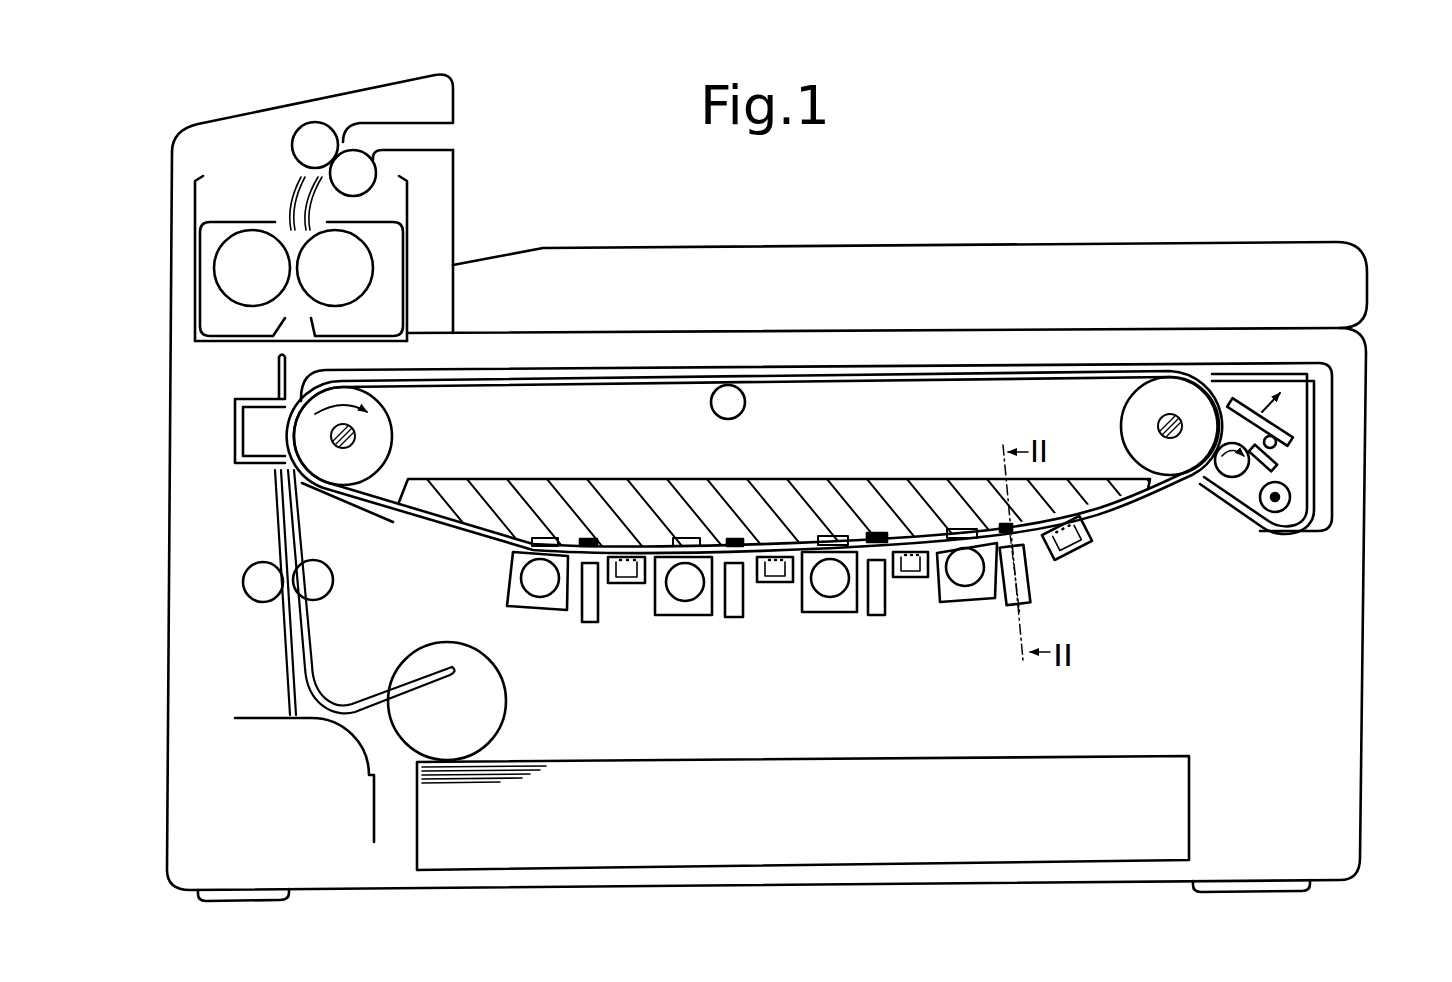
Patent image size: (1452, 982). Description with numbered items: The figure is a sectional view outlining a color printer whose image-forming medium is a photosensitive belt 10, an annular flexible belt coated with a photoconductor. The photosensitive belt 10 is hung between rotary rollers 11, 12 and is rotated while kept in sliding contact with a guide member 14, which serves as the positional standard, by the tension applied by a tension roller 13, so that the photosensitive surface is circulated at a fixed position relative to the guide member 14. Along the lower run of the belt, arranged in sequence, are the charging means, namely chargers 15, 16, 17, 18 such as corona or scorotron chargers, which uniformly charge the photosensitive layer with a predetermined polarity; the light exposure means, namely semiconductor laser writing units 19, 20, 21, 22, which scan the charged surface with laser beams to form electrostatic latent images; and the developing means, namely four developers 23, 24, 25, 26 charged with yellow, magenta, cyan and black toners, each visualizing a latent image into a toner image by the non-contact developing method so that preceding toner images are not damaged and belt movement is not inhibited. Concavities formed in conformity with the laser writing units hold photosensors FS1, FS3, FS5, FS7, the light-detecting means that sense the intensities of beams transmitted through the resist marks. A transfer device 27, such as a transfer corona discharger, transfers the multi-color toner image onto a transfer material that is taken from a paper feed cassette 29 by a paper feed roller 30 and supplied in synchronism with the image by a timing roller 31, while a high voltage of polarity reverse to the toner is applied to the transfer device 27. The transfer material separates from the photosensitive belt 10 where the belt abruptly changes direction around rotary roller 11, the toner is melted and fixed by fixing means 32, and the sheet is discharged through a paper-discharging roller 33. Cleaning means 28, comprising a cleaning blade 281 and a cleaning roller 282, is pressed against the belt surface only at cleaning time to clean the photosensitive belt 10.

The photosensitive belt 10 is at (1080, 372).
The rotary roller 11 is at (392, 430).
The rotary roller 12 is at (1120, 418).
The tension roller 13 is at (745, 403).
The guide member 14 is at (480, 479).
The charger 15 is at (1090, 540).
The charger 16 is at (907, 578).
The charger 17 is at (763, 582).
The charger 18 is at (620, 583).
The semiconductor laser writing unit 19 is at (1028, 598).
The semiconductor laser writing unit 20 is at (870, 618).
The semiconductor laser writing unit 21 is at (730, 617).
The semiconductor laser writing unit 22 is at (585, 625).
The developer 23 is at (950, 603).
The developer 24 is at (818, 613).
The developer 25 is at (680, 615).
The developer 26 is at (517, 612).
The transfer device 27 is at (235, 423).
The cleaning means 28 is at (1338, 443).
The cleaning blade 281 is at (1267, 422).
The cleaning roller 282 is at (1248, 468).
The paper feed cassette 29 is at (1192, 772).
The paper feed roller 30 is at (498, 730).
The timing roller 31 is at (333, 598).
The fixing means 32 is at (208, 290).
The paper-discharging roller 33 is at (312, 122).
The photosensor FS1 is at (1007, 527).
The photosensor FS3 is at (878, 533).
The photosensor FS5 is at (735, 539).
The photosensor FS7 is at (590, 538).